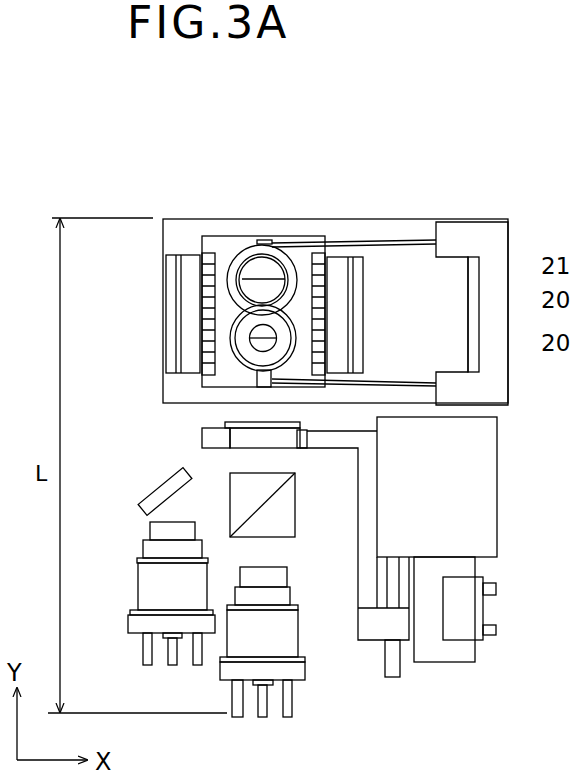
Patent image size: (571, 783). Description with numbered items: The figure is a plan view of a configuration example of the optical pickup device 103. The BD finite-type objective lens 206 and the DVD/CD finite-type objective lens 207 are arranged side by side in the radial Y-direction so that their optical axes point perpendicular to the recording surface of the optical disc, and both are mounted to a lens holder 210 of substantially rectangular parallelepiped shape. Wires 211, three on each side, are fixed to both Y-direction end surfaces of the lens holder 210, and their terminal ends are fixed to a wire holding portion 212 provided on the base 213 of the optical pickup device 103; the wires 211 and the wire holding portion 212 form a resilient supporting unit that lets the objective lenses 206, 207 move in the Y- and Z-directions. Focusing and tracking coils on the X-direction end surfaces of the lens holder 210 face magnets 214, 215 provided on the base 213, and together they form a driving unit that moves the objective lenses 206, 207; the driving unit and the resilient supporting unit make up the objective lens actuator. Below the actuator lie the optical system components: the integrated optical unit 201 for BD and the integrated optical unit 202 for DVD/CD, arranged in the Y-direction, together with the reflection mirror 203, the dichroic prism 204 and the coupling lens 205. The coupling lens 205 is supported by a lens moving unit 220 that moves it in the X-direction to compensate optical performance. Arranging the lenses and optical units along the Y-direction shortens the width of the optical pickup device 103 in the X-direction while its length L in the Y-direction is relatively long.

The optical pickup device 103 is at (329, 147).
The integrated optical unit for BD 201 is at (287, 633).
The integrated optical unit for DVD/CD 202 is at (155, 596).
The reflection mirror 203 is at (162, 483).
The dichroic prism 204 is at (275, 537).
The coupling lens 205 is at (245, 440).
The BD finite-type objective lens 206 is at (247, 348).
The DVD/CD finite-type objective lens 207 is at (257, 287).
The lens holder 210 is at (305, 236).
The wires 211 is at (397, 241).
The wire holding portion 212 is at (492, 222).
The base 213 is at (190, 219).
The magnet 214 is at (183, 317).
The magnet 215 is at (340, 292).
The lens moving unit 220 is at (490, 493).